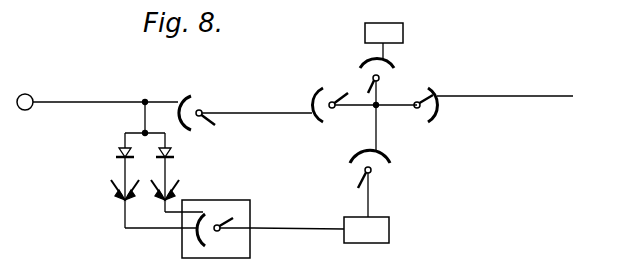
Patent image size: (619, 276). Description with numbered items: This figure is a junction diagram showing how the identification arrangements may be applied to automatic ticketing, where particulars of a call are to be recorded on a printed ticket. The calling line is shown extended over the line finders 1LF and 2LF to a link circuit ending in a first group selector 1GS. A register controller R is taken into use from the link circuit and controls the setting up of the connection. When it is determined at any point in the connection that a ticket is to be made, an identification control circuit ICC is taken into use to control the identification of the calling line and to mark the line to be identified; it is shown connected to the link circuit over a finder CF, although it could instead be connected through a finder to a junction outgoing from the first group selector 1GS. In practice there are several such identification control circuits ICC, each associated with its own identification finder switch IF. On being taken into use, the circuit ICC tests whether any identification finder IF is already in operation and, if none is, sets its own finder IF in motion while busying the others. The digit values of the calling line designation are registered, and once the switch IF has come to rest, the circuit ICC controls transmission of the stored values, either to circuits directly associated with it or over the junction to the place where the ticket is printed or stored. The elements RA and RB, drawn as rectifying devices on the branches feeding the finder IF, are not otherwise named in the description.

The line finder 1LF is at (197, 101).
The line finder 2LF is at (327, 94).
The first group selector 1GS is at (432, 94).
The register controller R is at (381, 58).
The finder CF is at (378, 169).
The identification control circuit ICC is at (366, 230).
The identification finder switch IF is at (216, 229).
The rectifier A RA is at (142, 180).
The rectifier B RB is at (177, 172).